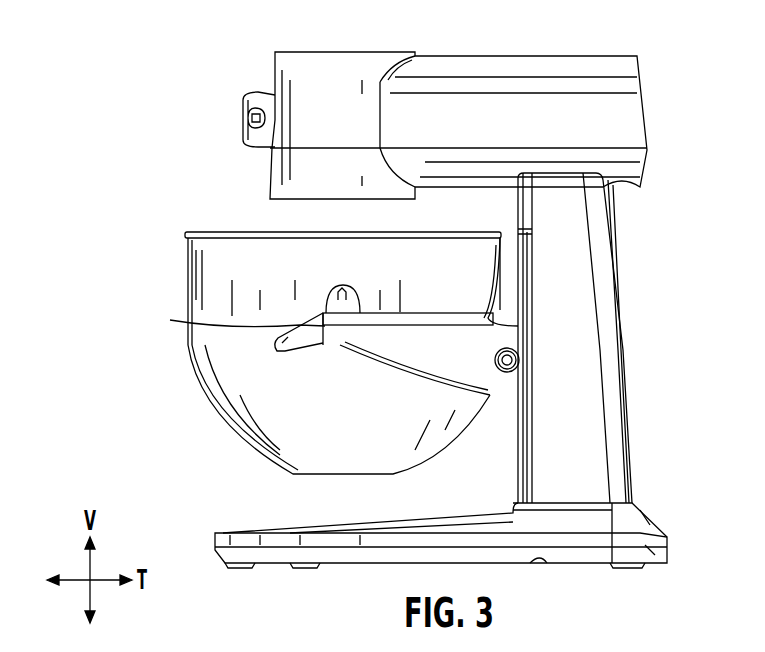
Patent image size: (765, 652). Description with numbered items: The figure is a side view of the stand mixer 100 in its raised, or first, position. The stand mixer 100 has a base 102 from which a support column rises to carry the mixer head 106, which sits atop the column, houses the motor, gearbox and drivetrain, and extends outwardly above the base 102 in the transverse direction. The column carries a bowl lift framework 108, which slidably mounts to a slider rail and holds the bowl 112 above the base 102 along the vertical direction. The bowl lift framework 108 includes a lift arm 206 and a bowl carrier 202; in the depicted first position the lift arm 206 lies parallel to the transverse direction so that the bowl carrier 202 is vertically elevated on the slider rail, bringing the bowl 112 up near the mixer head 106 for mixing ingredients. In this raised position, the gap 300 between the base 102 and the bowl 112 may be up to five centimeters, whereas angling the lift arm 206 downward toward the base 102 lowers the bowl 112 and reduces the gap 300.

The stand mixer 100 is at (150, 132).
The base 102 is at (572, 540).
The mixer head 106 is at (421, 100).
The bowl lift framework 108 is at (573, 275).
The bowl 112 is at (218, 260).
The bowl carrier 202 is at (522, 323).
The lift arm 206 is at (215, 328).
The gap 300 is at (265, 512).